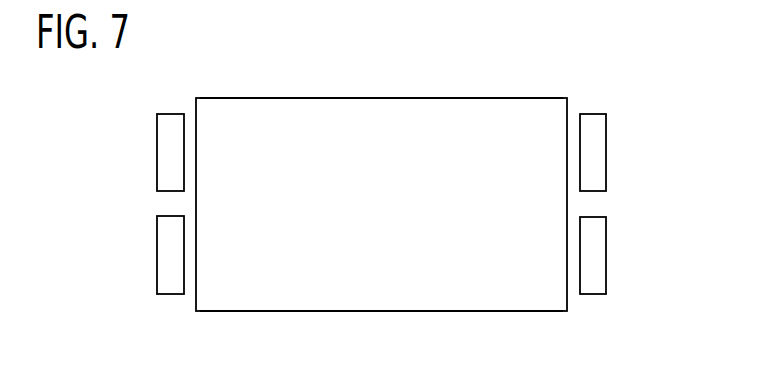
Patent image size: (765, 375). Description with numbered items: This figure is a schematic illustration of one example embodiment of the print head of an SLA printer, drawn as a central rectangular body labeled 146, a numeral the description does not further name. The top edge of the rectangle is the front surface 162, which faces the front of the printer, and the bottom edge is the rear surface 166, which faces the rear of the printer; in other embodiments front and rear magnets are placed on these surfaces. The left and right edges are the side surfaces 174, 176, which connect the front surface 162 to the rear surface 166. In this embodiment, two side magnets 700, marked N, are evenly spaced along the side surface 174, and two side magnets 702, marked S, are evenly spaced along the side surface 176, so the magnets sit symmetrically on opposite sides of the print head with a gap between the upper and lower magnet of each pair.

The body 146 is at (397, 222).
The front surface 162 is at (383, 98).
The rear surface 166 is at (382, 311).
The side magnets 700 is at (157, 126).
The side magnets 702 is at (606, 126).
The side surface 174 is at (196, 207).
The side surface 176 is at (567, 207).